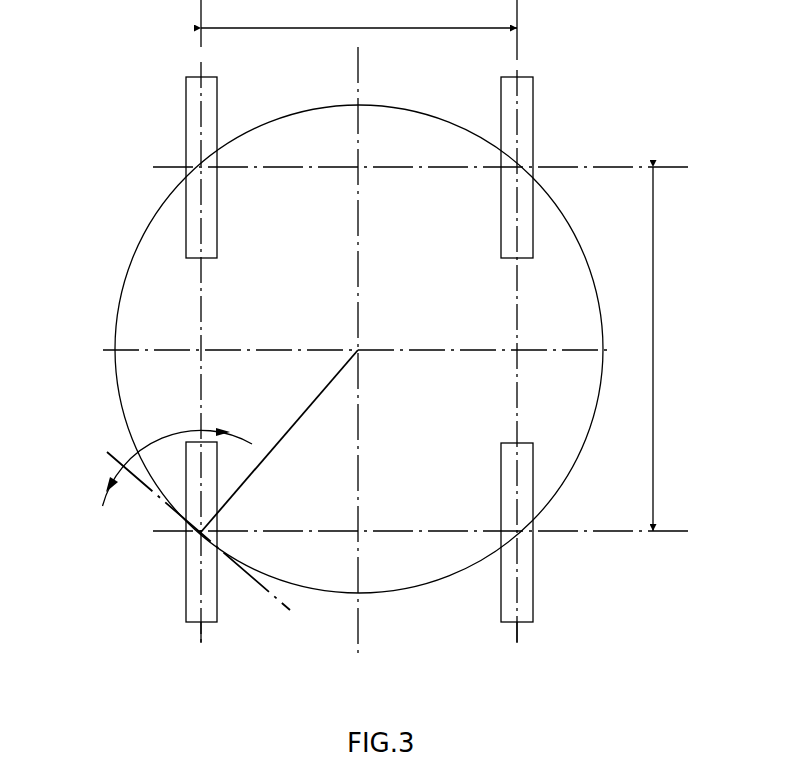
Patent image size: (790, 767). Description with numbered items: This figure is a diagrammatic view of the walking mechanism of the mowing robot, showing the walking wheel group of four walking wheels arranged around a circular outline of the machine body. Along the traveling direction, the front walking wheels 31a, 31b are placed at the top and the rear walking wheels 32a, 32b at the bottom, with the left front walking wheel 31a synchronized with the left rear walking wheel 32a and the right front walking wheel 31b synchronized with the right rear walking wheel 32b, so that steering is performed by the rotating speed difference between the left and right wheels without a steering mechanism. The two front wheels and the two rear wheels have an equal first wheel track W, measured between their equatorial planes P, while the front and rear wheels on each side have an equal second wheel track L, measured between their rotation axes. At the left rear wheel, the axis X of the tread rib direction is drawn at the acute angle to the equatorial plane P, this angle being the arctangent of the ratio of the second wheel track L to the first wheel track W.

The left front walking wheel 31a is at (192, 128).
The right front walking wheel 31b is at (522, 133).
The left rear walking wheel 32a is at (193, 563).
The right rear walking wheel 32b is at (522, 562).
The equatorial plane P is at (200, 637).
The axis of tread rib extending direction X is at (153, 496).
The first wheel track W is at (359, 14).
The second wheel track L is at (666, 349).